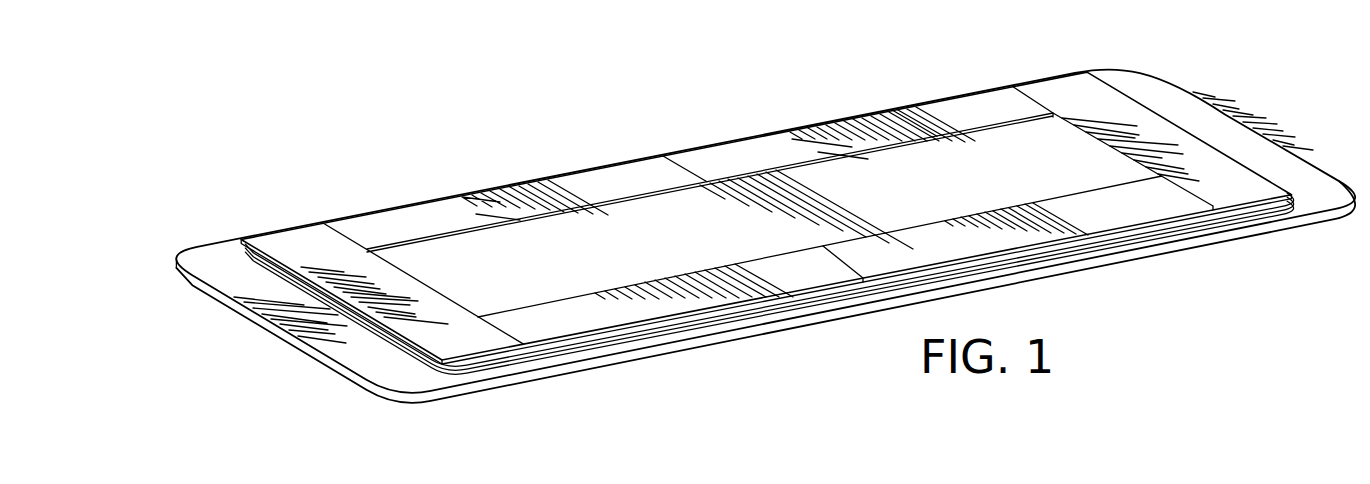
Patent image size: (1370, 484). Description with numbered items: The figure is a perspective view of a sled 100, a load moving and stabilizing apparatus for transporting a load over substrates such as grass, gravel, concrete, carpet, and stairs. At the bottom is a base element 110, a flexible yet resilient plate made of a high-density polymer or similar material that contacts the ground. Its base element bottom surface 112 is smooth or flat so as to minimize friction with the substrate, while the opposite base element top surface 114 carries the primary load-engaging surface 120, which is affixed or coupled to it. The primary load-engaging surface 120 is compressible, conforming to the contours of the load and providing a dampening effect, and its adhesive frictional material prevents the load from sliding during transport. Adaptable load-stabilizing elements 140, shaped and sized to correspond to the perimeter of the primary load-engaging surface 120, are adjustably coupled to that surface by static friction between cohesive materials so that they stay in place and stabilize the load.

The sled 100 is at (333, 117).
The base element 110 is at (336, 345).
The base element bottom surface 112 is at (268, 343).
The base element top surface 114 is at (242, 292).
The primary load-engaging surface 120 is at (630, 226).
The adaptable load-stabilizing elements 140 is at (533, 342).